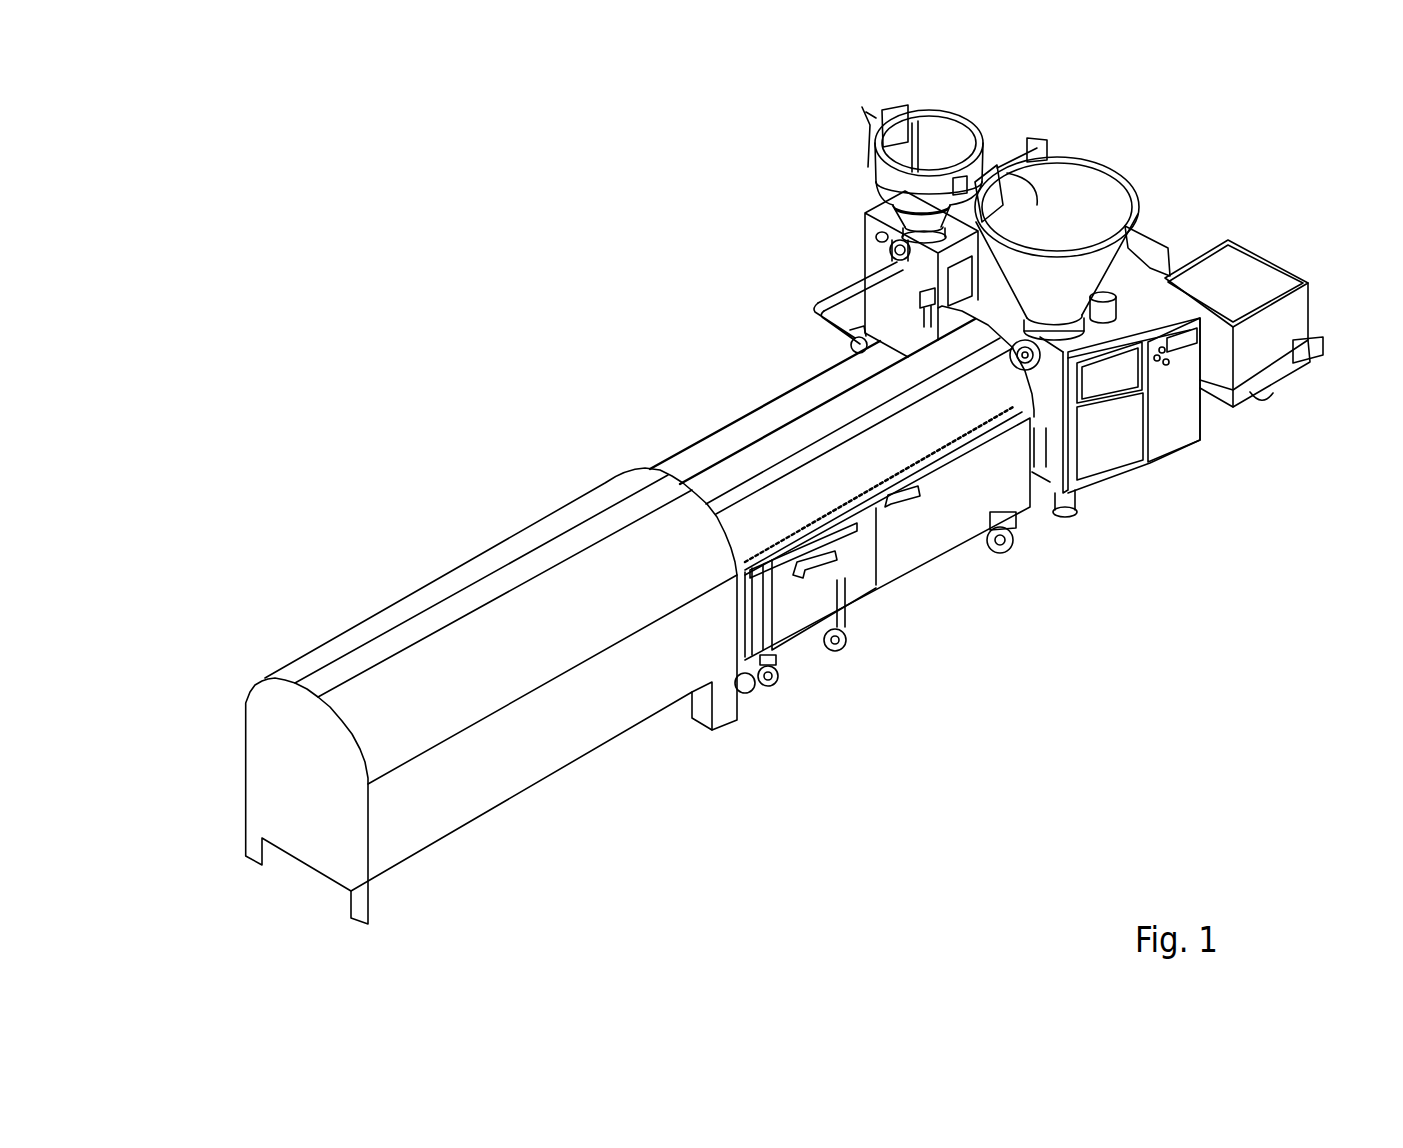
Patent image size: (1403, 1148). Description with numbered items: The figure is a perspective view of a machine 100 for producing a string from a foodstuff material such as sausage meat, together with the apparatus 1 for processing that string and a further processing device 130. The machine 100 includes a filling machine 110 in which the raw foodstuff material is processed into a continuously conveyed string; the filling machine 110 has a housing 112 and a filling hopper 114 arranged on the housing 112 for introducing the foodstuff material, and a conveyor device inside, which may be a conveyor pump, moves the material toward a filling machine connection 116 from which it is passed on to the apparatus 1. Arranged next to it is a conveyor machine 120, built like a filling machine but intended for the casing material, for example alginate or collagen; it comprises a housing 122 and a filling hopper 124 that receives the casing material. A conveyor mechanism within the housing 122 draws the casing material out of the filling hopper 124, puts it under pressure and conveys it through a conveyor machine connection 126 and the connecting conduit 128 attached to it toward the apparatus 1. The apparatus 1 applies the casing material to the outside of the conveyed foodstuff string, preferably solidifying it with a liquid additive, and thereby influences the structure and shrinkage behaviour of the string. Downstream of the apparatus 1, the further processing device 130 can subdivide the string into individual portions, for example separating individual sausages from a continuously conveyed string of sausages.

The apparatus 1 is at (931, 606).
The machine 100 is at (642, 224).
The filling machine 110 is at (1228, 184).
The housing 112 is at (1167, 438).
The filling hopper 114 is at (1097, 197).
The filling machine connection 116 is at (1070, 397).
The conveyor machine 120 is at (845, 111).
The housing 122 is at (873, 253).
The filling hopper 124 is at (947, 125).
The conveyor machine connection 126 is at (860, 237).
The connecting conduit 128 is at (833, 293).
The further processing device 130 is at (404, 538).